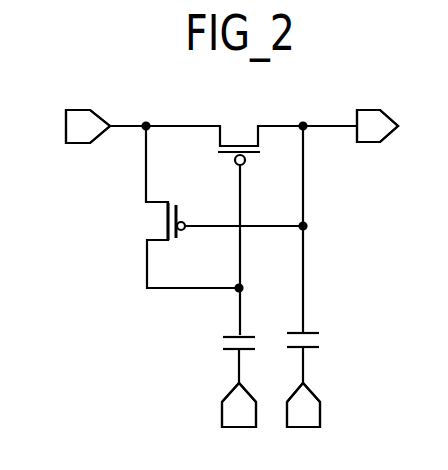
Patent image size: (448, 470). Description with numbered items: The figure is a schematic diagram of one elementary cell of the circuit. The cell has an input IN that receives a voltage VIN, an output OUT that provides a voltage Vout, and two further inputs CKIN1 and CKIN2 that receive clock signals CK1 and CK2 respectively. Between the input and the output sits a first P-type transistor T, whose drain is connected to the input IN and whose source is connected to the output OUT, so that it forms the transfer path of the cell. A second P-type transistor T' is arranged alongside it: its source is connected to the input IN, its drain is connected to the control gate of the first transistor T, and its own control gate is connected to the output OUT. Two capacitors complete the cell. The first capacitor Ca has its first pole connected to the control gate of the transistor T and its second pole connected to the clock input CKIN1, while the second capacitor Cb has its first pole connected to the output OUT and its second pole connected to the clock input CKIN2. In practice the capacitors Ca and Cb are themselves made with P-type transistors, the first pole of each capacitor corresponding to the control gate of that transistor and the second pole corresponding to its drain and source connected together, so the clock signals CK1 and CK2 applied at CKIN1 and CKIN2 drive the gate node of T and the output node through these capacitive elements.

The input voltage VIN is at (68, 126).
The input IN is at (83, 110).
The output OUT is at (371, 110).
The output voltage Vout is at (390, 143).
The first P-type transistor T is at (239, 127).
The second P-type transistor T' is at (144, 223).
The first capacitor Ca is at (243, 335).
The second capacitor Cb is at (308, 333).
The clock signal CK1 is at (236, 407).
The clock signal CK2 is at (304, 406).
The clock input CKIN1 is at (222, 412).
The clock input CKIN2 is at (320, 410).